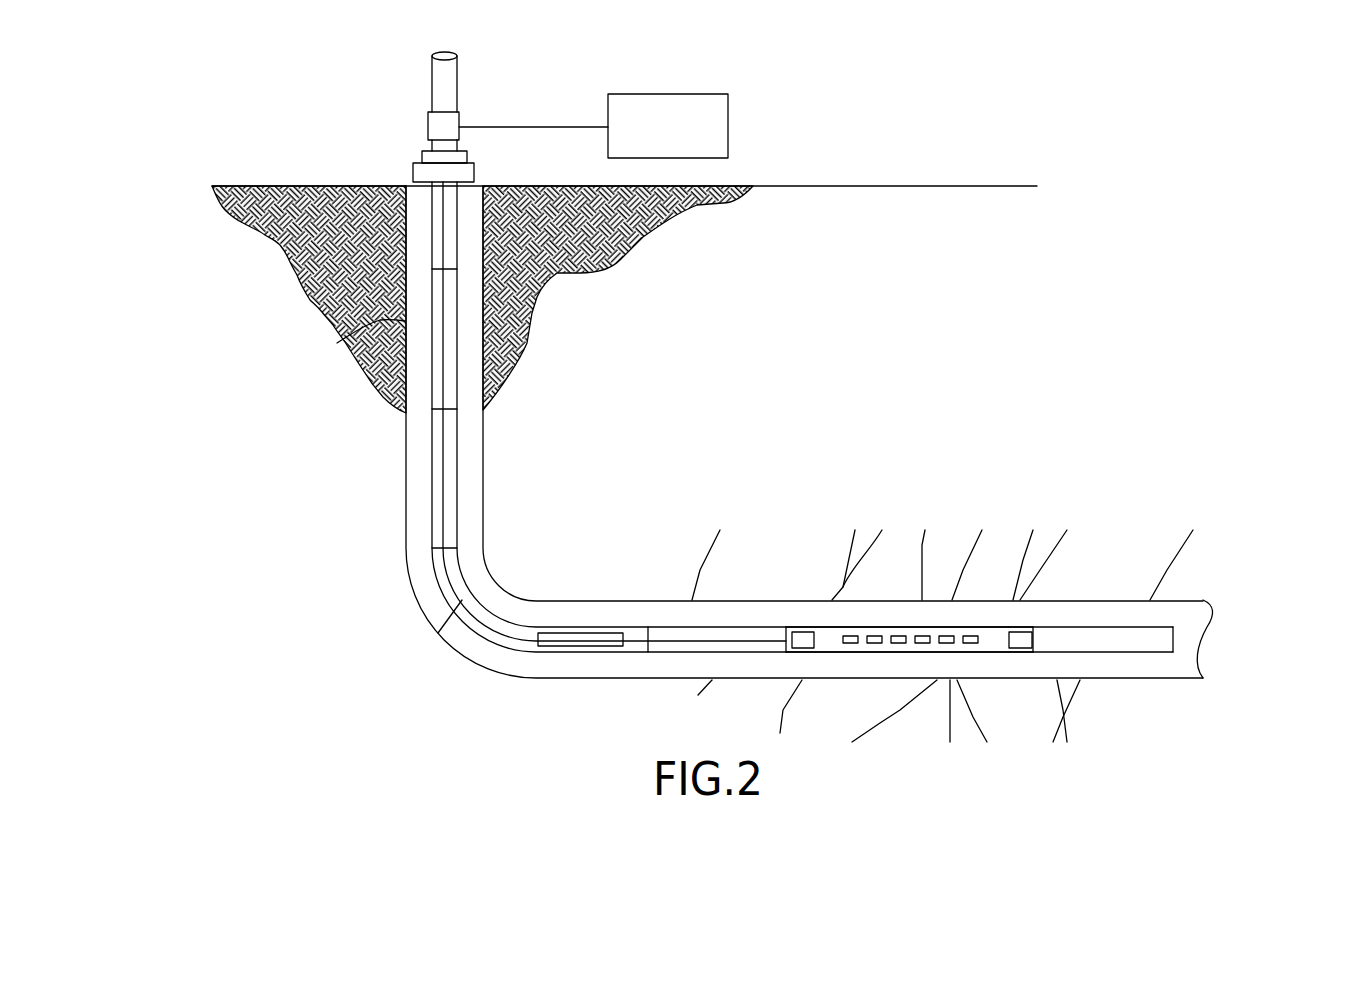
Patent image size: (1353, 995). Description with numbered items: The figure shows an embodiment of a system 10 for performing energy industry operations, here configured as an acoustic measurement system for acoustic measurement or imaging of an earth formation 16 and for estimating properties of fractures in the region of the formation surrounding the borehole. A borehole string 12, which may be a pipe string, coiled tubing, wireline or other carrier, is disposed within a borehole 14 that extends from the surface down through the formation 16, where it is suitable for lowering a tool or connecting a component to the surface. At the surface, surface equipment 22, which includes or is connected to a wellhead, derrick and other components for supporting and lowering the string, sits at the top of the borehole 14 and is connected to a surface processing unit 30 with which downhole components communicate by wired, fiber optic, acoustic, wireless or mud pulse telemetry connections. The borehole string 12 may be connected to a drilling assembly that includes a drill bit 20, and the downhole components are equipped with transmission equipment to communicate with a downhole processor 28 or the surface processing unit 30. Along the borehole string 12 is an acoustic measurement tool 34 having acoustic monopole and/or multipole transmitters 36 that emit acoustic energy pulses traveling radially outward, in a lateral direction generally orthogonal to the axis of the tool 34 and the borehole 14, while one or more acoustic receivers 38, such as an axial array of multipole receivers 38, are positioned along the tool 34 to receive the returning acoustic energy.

The system 10 is at (318, 48).
The borehole string 12 is at (483, 286).
The borehole 14 is at (337, 343).
The earth formation 16 is at (337, 292).
The drill bit 20 is at (1185, 620).
The surface equipment 22 is at (429, 127).
The downhole processor 28 is at (597, 633).
The surface processing unit 30 is at (668, 110).
The acoustic measurement tool 34 is at (853, 653).
The acoustic transmitters 36 is at (805, 632).
The acoustic receivers 38 is at (875, 636).